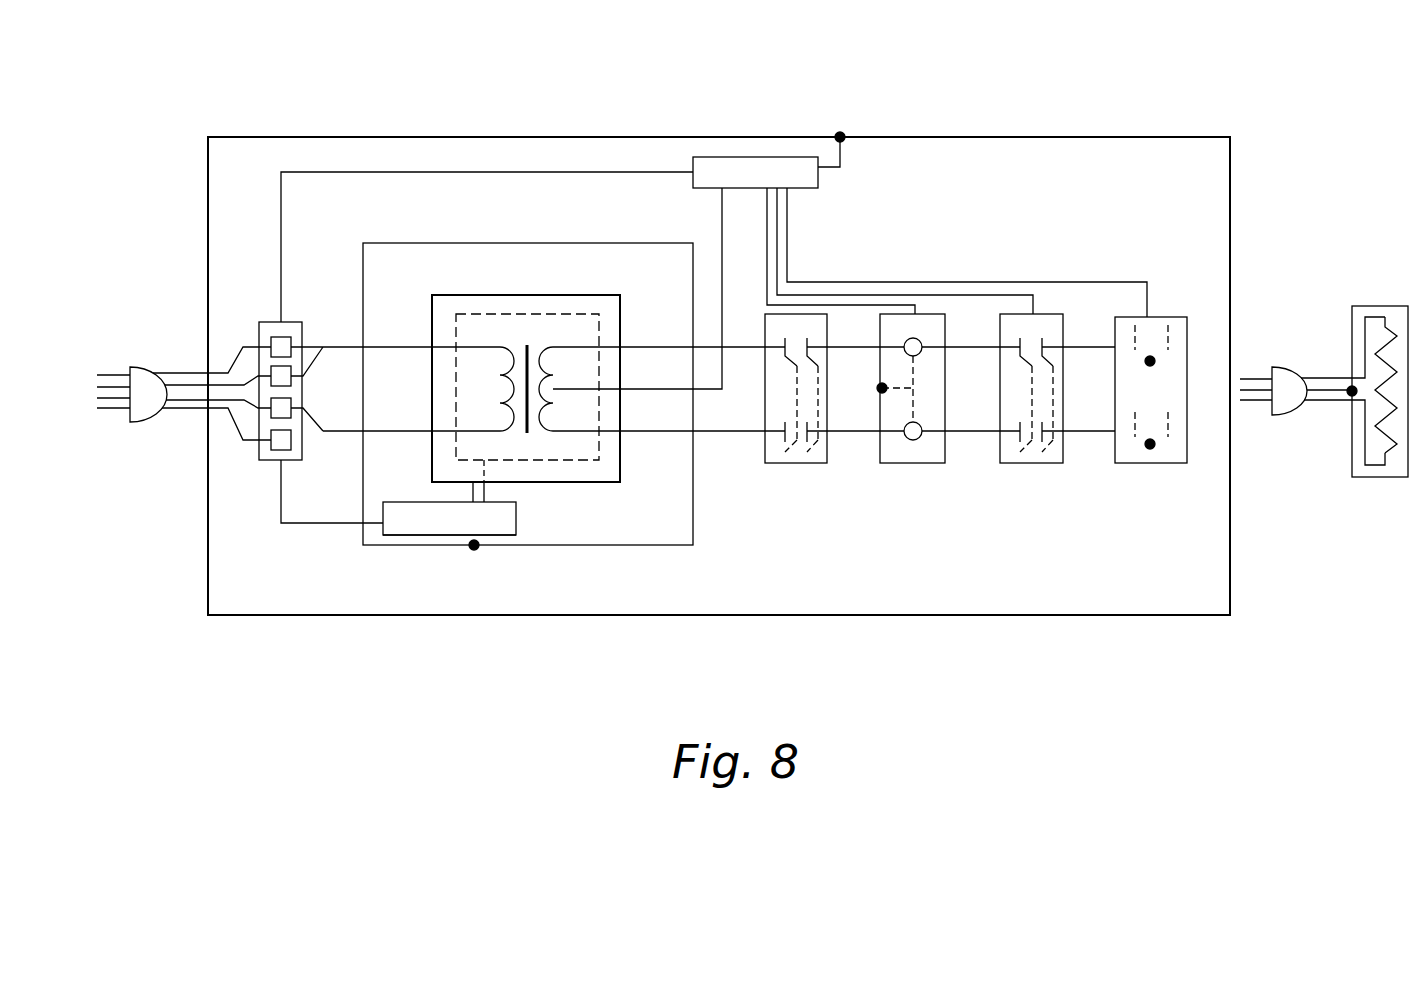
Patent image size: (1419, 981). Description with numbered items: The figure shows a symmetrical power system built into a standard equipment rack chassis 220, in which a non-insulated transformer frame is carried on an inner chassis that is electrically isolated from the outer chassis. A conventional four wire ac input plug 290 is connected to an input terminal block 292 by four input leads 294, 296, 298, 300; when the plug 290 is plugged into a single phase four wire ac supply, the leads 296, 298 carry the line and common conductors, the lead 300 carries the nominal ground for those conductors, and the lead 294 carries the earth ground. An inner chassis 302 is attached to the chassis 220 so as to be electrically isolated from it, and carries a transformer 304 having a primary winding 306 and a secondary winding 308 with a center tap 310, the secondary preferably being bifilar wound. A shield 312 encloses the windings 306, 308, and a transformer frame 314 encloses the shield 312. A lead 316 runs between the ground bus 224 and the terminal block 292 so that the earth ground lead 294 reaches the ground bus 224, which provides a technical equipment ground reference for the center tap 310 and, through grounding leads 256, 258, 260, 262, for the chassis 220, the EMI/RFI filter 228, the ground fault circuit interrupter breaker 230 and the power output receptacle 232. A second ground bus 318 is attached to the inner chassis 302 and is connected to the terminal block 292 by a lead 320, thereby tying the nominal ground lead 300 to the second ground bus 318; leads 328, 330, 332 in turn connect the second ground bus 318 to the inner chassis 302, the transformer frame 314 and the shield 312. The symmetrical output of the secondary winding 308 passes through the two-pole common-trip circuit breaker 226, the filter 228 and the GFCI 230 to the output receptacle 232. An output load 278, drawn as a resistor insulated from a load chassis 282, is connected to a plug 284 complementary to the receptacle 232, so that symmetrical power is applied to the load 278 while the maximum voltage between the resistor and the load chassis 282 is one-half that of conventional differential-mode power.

The equipment rack chassis 220 is at (1188, 137).
The ground bus 224 is at (765, 157).
The circuit breaker 226 is at (808, 463).
The EMI/RFI filter 228 is at (915, 463).
The ground fault circuit interrupter breaker 230 is at (1045, 463).
The power output receptacle 232 is at (1143, 463).
The grounding lead 256 is at (846, 154).
The grounding lead 258 is at (767, 228).
The grounding lead 260 is at (777, 243).
The grounding lead 262 is at (1118, 282).
The output load 278 is at (1385, 298).
The load chassis 282 is at (1375, 478).
The plug 284 is at (1282, 367).
The four wire ac input plug 290 is at (147, 367).
The input terminal block 292 is at (272, 322).
The input lead 294 is at (173, 372).
The input lead 296 is at (196, 384).
The input lead 298 is at (166, 409).
The input lead 300 is at (180, 398).
The inner chassis 302 is at (557, 243).
The transformer 304 is at (590, 268).
The primary winding 306 is at (500, 345).
The secondary winding 308 is at (556, 346).
The center tap 310 is at (675, 389).
The shield 312 is at (530, 314).
The transformer frame 314 is at (612, 482).
The lead 316 is at (358, 172).
The second ground bus 318 is at (417, 535).
The lead 320 is at (281, 497).
The lead 328 is at (473, 546).
The lead 330 is at (470, 492).
The lead 332 is at (486, 494).